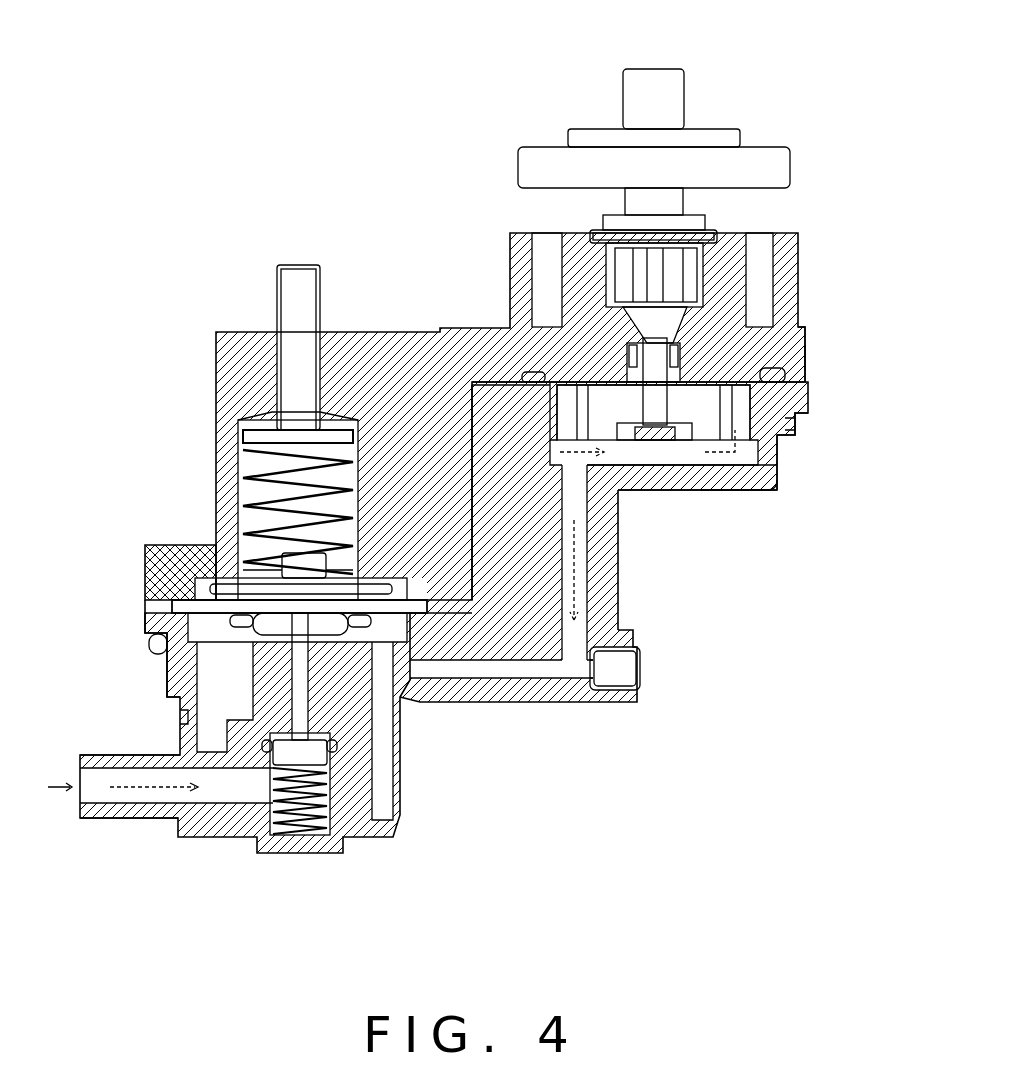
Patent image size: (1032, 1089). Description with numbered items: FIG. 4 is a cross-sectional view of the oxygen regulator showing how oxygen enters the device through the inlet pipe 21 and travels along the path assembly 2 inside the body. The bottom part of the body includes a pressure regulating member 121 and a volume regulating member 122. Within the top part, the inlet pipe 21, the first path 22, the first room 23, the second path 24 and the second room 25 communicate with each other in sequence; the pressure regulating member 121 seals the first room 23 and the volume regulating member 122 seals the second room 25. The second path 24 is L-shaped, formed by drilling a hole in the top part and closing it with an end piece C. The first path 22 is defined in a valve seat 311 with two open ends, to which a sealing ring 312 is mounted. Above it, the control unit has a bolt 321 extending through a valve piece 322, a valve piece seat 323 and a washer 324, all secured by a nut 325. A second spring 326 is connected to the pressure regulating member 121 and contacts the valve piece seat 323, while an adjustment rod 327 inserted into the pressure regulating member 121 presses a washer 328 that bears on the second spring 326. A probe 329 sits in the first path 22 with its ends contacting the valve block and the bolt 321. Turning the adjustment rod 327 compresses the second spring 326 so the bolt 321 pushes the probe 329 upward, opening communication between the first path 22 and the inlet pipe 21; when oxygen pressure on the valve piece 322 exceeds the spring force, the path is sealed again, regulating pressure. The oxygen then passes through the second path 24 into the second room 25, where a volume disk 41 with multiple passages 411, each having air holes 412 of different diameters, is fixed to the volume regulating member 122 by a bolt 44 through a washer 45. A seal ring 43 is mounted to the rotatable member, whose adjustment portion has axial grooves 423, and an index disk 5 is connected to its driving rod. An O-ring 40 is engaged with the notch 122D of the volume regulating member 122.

The path assembly 2 is at (132, 930).
The index disk 5 is at (645, 88).
The inlet pipe 21 is at (120, 795).
The first path 22 is at (245, 835).
The first room 23 is at (420, 705).
The second path 24 is at (472, 677).
The second room 25 is at (727, 477).
The O-ring 40 is at (808, 379).
The volume disk 41 is at (795, 423).
The seal ring 43 is at (805, 333).
The bolt 44 is at (647, 447).
The washer 45 is at (682, 445).
The pressure regulating member 121 is at (357, 347).
The volume regulating member 122 is at (580, 263).
The notch 122D is at (805, 355).
The valve seat 311 is at (167, 683).
The sealing ring 312 is at (180, 717).
The bolt 321 is at (147, 607).
The valve piece 322 is at (147, 580).
The valve piece seat 323 is at (195, 598).
The washer 324 is at (215, 540).
The nut 325 is at (218, 490).
The second spring 326 is at (247, 436).
The adjustment rod 327 is at (292, 288).
The washer 328 is at (263, 433).
The probe 329 is at (150, 642).
The passages 411 is at (777, 478).
The air holes 412 is at (780, 445).
The axial grooves 423 is at (690, 255).
The end piece C is at (618, 695).